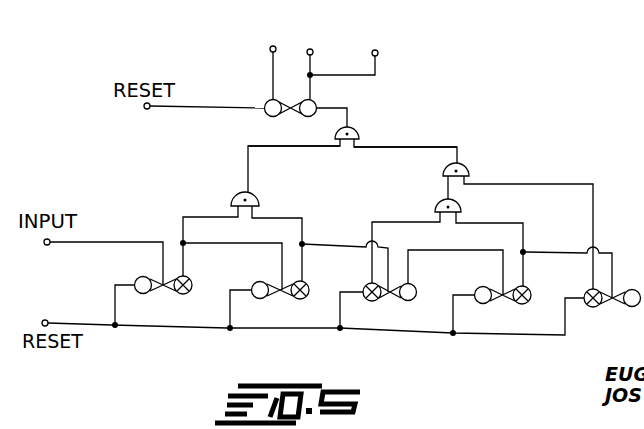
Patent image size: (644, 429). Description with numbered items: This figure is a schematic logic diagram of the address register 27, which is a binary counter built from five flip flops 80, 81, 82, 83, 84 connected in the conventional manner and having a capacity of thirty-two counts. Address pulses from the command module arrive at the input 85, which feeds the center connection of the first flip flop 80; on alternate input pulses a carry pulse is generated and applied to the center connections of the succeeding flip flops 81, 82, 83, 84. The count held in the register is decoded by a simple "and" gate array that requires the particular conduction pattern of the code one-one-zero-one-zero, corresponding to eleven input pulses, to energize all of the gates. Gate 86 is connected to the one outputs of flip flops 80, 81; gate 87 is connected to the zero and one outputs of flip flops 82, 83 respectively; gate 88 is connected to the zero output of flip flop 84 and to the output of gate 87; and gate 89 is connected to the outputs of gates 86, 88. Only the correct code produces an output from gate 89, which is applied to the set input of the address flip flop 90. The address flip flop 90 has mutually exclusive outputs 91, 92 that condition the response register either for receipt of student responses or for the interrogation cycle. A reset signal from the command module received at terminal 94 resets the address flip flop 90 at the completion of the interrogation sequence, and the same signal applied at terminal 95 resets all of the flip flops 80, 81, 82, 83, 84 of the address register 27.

The address register 27 is at (488, 132).
The first flip flop 80 is at (145, 294).
The second flip flop 81 is at (262, 299).
The third flip flop 82 is at (374, 301).
The fourth flip flop 83 is at (485, 304).
The fifth flip flop 84 is at (596, 307).
The input 85 is at (47, 245).
The gate 86 is at (257, 194).
The gate 87 is at (436, 202).
The gate 88 is at (444, 166).
The gate 89 is at (358, 131).
The address flip flop 90 is at (265, 104).
The output 91 is at (311, 49).
The output 92 is at (272, 45).
The terminal 94 is at (148, 109).
The terminal 95 is at (45, 320).